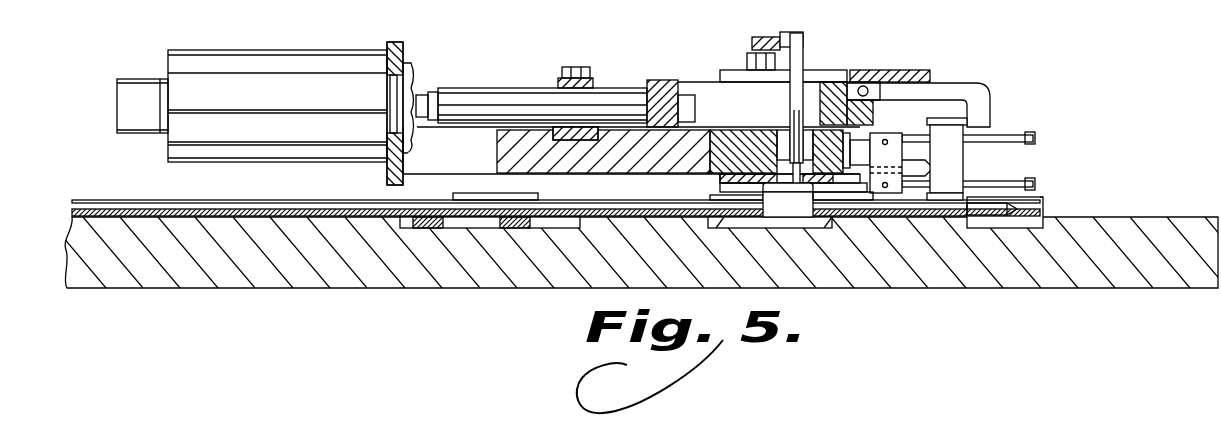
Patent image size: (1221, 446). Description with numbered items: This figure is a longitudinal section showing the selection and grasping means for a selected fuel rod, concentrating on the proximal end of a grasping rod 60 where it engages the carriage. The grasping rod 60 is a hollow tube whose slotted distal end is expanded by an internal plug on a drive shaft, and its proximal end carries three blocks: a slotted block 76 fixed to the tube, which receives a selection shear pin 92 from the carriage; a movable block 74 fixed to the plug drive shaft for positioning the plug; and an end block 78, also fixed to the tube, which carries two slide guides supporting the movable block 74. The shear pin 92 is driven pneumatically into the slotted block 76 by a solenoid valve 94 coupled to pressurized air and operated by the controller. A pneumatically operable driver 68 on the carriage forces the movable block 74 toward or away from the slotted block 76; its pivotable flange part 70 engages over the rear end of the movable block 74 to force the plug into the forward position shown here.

The grasping rod 60 is at (165, 209).
The pneumatically operable driver 68 is at (267, 143).
The pivotable flange part 70 is at (970, 87).
The movable block 74 is at (953, 163).
The slotted block 76 is at (780, 206).
The end block 78 is at (897, 140).
The shear pin 92 is at (730, 137).
The solenoid valve 94 is at (797, 33).